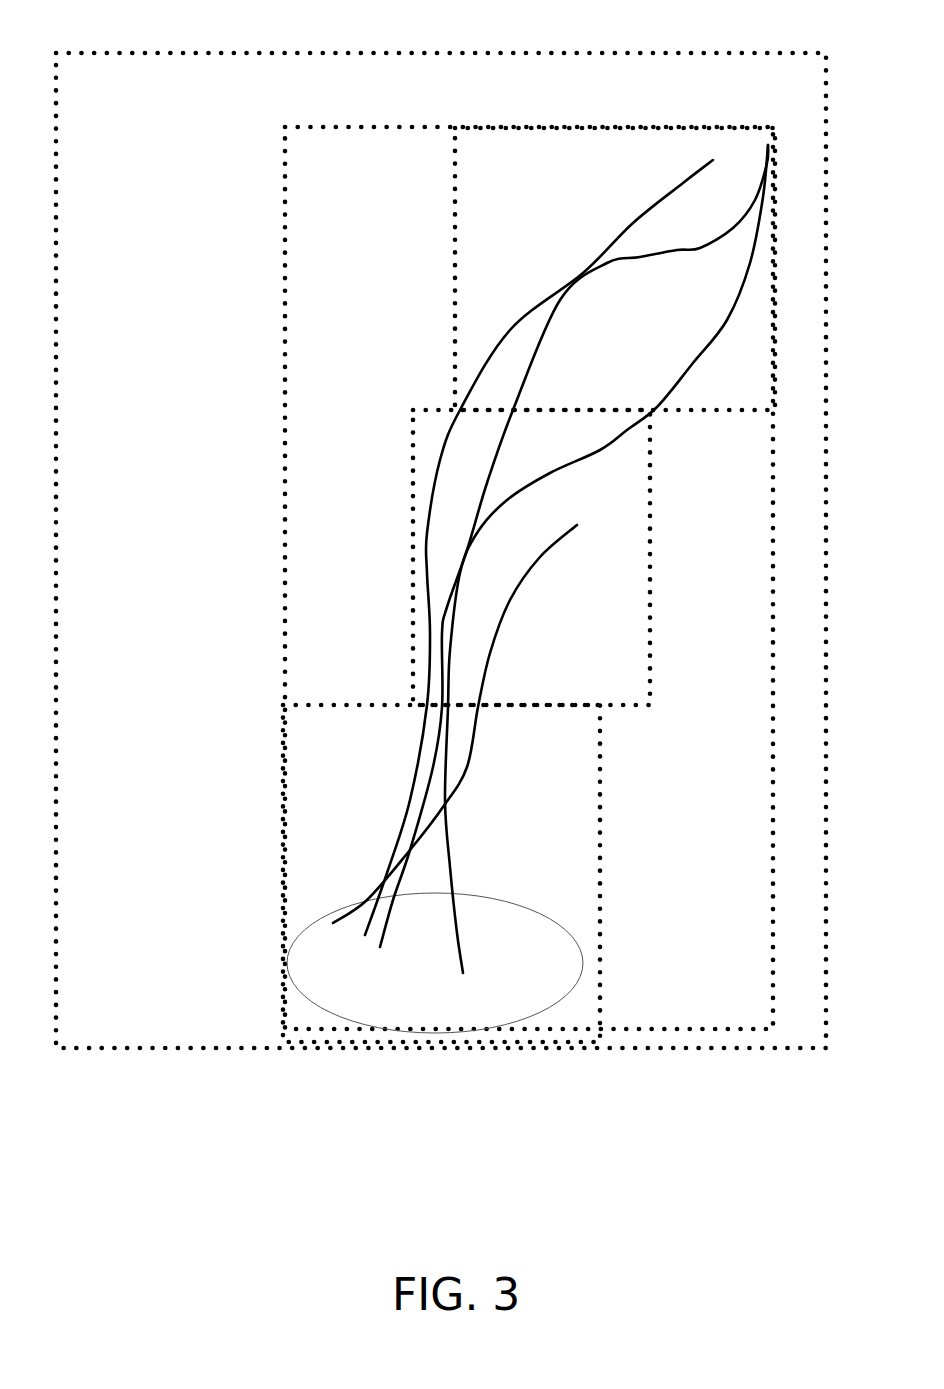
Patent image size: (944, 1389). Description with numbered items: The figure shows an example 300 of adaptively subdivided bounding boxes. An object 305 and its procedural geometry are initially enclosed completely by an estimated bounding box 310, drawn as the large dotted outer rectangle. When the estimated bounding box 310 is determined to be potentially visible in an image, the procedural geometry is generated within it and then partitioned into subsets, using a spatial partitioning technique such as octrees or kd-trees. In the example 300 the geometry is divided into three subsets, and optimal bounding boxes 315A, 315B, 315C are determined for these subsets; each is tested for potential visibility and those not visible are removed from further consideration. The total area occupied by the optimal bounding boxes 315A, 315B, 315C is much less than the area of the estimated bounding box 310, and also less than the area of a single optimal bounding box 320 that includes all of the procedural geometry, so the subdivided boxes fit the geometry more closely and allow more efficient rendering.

The example 300 is at (441, 555).
The object 305 is at (358, 980).
The estimated bounding box 310 is at (220, 1050).
The optimal bounding box 315A is at (615, 269).
The optimal bounding box 315B is at (531, 557).
The optimal bounding box 315C is at (441, 873).
The single optimal bounding box 320 is at (288, 235).